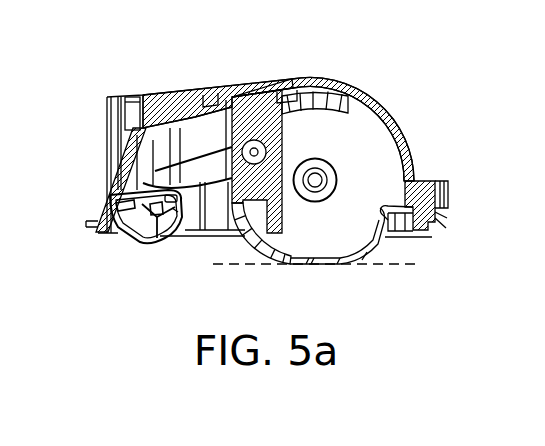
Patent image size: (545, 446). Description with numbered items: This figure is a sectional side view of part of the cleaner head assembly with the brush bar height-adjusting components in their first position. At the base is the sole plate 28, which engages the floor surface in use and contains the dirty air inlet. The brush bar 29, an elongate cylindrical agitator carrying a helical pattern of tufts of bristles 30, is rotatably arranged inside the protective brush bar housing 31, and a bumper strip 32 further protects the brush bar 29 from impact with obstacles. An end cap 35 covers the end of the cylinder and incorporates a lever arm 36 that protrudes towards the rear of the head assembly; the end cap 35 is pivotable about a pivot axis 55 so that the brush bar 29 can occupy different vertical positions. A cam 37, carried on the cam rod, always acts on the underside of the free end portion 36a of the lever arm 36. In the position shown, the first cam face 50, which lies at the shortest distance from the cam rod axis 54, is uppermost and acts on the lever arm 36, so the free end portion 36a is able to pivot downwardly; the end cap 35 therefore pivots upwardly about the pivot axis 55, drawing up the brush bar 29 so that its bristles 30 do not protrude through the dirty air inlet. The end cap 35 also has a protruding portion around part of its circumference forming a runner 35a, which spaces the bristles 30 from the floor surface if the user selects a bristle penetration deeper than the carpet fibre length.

The sole plate 28 is at (410, 265).
The brush bar 29 is at (352, 262).
The bristles 30 is at (340, 100).
The brush bar housing 31 is at (406, 138).
The bumper strip 32 is at (450, 193).
The end cap 35 is at (320, 128).
The runner 35a is at (308, 256).
The lever arm 36 is at (212, 170).
The free end portion of the lever arm 36a is at (150, 183).
The cam 37 is at (158, 246).
The first cam face 50 is at (148, 193).
The cam rod axis 54 is at (178, 205).
The pivot axis 55 is at (256, 148).